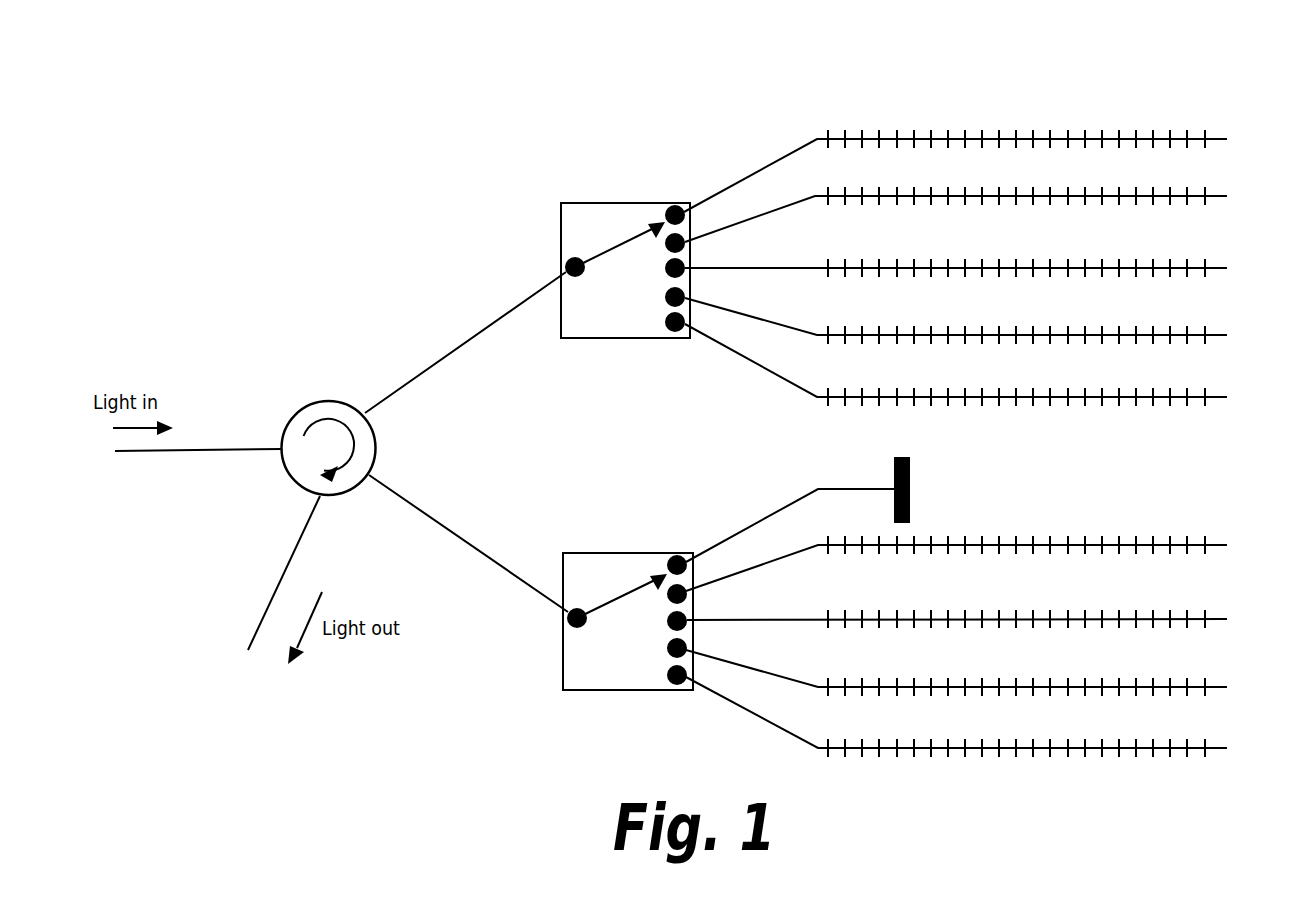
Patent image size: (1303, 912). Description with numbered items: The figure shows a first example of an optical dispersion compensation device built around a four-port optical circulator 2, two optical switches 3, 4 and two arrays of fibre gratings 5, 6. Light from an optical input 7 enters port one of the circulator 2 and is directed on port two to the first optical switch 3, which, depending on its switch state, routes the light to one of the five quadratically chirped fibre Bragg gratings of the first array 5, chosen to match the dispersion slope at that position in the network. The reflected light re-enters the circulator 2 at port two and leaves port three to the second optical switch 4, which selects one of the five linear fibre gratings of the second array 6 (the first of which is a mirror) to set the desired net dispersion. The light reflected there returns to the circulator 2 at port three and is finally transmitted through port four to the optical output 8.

The four-port optical circulator 2 is at (373, 462).
The first optical switch 3 is at (608, 340).
The second optical switch 4 is at (647, 552).
The first array of fibre gratings 5 is at (1088, 60).
The second array of fibre gratings 6 is at (1088, 500).
The optical input 7 is at (143, 452).
The optical output 8 is at (268, 605).